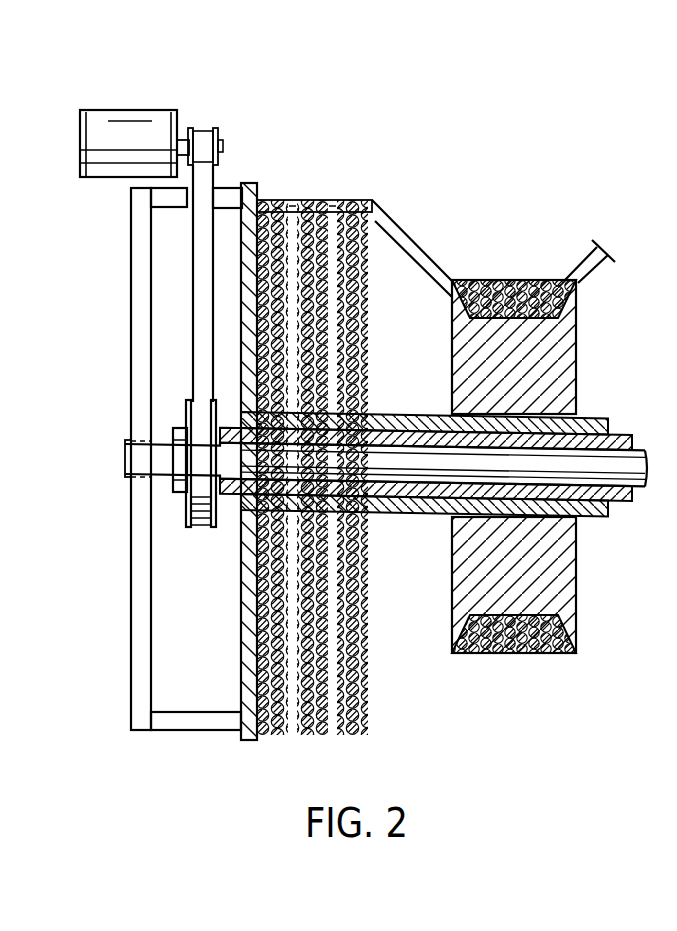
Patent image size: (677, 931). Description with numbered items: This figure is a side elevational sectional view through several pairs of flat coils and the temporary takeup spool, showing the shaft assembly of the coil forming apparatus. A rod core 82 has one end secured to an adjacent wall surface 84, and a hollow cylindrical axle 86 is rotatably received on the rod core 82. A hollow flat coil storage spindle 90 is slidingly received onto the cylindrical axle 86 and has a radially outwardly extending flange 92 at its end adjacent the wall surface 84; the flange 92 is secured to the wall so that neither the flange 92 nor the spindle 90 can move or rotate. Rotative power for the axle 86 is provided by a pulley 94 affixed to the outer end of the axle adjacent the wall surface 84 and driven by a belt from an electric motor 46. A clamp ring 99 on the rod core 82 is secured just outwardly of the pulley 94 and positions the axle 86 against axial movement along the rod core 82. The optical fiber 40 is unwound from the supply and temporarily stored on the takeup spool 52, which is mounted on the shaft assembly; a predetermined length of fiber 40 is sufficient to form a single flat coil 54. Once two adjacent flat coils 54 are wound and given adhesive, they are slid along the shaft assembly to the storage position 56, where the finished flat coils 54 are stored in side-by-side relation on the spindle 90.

The optical fiber 40 is at (402, 244).
The electric motor 46 is at (162, 124).
The takeup spool 52 is at (466, 350).
The flat coil 54 is at (349, 752).
The storage position 56 is at (321, 190).
The rod core 82 is at (158, 442).
The wall surface 84 is at (140, 262).
The hollow cylindrical axle 86 is at (408, 514).
The flat coil storage spindle 90 is at (592, 431).
The flange 92 is at (247, 182).
The pulley 94 is at (215, 530).
The clamp ring 99 is at (177, 497).